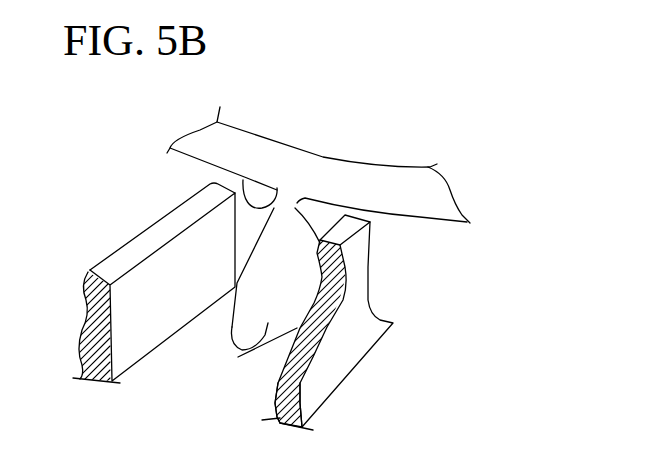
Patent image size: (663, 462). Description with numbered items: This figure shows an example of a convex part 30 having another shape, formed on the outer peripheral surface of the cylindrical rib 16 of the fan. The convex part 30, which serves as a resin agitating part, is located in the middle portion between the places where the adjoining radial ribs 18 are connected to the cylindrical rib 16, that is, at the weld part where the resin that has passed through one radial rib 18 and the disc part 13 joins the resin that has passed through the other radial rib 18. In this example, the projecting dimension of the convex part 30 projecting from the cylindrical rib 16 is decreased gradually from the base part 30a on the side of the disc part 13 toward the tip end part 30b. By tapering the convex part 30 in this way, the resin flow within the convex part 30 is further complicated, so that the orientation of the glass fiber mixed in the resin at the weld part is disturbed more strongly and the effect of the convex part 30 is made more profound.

The disc part 13 is at (267, 367).
The cylindrical rib 16 is at (323, 170).
The radial rib 18 is at (163, 233).
The convex part 30 is at (250, 309).
The base part 30a is at (238, 357).
The tip end part 30b is at (243, 185).